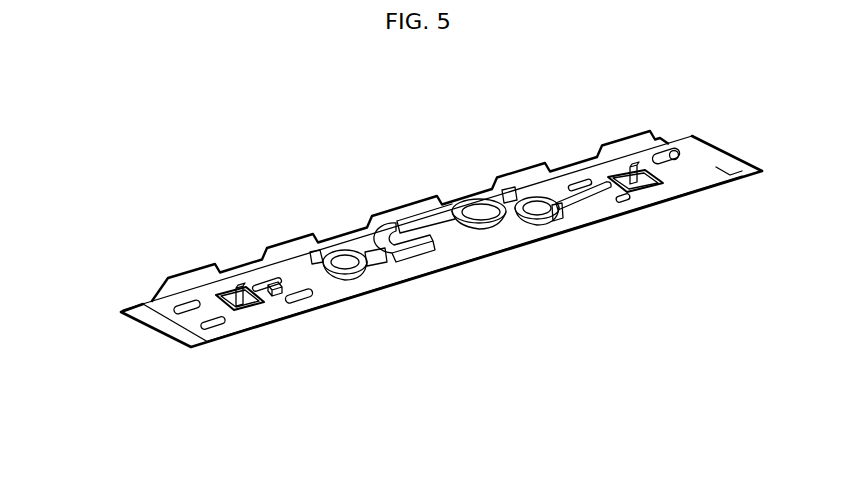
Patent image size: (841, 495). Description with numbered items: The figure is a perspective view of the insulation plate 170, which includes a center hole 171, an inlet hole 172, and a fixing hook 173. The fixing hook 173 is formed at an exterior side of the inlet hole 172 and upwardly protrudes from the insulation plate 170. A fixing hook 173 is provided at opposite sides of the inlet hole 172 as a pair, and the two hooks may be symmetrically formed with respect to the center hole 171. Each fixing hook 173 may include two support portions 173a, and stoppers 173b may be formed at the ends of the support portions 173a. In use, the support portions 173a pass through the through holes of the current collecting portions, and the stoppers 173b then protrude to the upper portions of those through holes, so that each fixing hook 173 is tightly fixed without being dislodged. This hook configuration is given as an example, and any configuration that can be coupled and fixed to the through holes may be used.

The insulation plate 170 is at (100, 110).
The center hole 171 is at (477, 225).
The inlet hole 172 is at (518, 228).
The fixing hook 173 is at (197, 412).
The support portion 173a is at (247, 293).
The stopper 173b is at (288, 302).